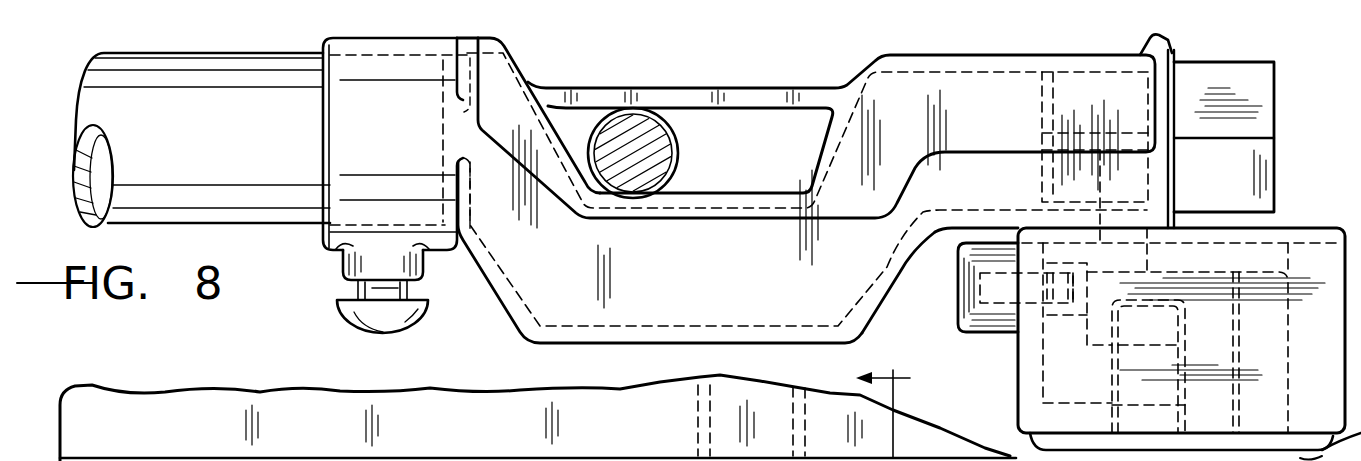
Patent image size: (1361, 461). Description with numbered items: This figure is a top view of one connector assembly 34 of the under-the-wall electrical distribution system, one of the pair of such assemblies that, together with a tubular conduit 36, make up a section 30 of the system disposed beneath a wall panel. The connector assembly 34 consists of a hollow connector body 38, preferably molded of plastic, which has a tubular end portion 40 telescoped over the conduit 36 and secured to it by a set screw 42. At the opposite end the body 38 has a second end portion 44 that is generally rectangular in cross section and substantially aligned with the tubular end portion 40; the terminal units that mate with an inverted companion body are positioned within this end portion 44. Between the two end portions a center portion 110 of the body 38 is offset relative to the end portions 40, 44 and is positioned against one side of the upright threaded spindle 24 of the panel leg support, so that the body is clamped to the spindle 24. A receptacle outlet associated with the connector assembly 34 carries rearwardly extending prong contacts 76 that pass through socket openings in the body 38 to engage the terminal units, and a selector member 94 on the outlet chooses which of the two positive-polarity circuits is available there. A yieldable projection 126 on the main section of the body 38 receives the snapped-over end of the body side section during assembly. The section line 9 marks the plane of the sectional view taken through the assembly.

The section line 9- 9 is at (861, 409).
The upright threaded spindle 24 is at (679, 150).
The section 30 is at (697, 92).
The connector assembly 34 is at (915, 275).
The tubular conduit 36 is at (236, 147).
The connector body 38 is at (730, 273).
The tubular end portion 40 is at (370, 48).
The set screw 42 is at (357, 313).
The second end portion 44 is at (1097, 53).
The prong contact 76 is at (1148, 178).
The selector member 94 is at (988, 325).
The center portion 110 is at (643, 303).
The yieldable projection 126 is at (1157, 53).